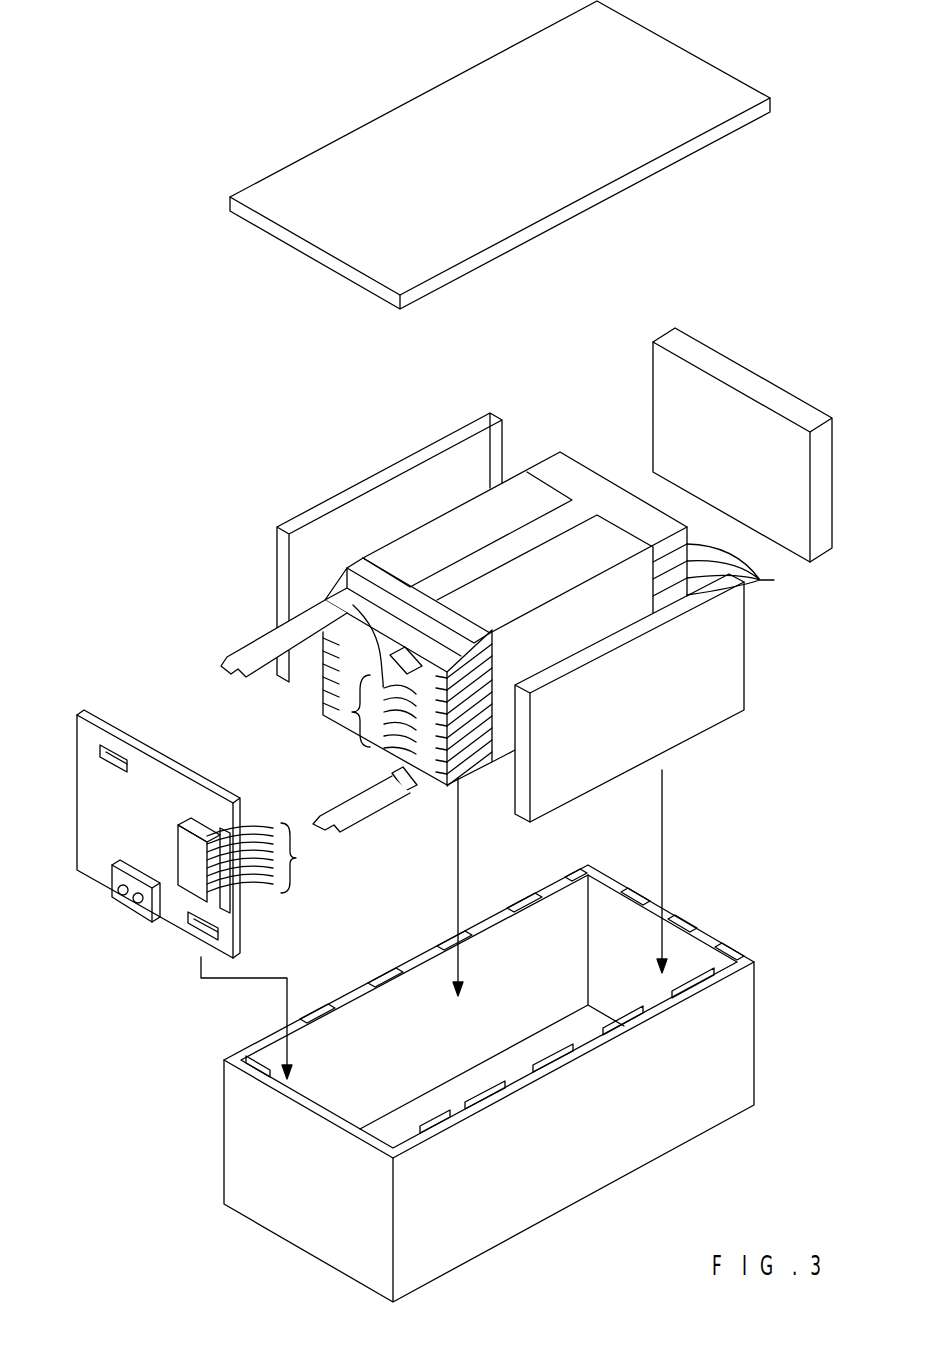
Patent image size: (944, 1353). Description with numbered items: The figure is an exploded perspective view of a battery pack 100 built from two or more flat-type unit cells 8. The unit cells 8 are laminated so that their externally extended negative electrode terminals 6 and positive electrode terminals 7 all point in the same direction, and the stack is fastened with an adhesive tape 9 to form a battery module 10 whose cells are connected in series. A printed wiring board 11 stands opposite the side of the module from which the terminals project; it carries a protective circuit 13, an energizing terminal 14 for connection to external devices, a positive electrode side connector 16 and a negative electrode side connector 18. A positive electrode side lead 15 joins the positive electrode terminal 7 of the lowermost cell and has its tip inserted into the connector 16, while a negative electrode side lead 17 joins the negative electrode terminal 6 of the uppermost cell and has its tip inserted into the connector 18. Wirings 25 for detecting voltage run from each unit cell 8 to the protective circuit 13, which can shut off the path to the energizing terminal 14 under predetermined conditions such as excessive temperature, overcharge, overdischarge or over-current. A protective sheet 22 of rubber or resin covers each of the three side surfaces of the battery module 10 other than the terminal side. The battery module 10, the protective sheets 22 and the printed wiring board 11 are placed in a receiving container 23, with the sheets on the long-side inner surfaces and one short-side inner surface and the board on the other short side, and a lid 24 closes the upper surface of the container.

The battery pack 100 is at (81, 184).
The lid 24 is at (703, 83).
The protective sheet 22 is at (350, 497).
The battery module 10 is at (439, 510).
The adhesive tape 9 is at (588, 548).
The negative electrode terminal 6 is at (327, 598).
The negative electrode side lead 17 is at (232, 652).
The positive electrode terminal 7 is at (420, 660).
The positive electrode side lead 15 is at (370, 824).
The unit cell 8 is at (738, 570).
The wiring for detecting voltage 25 is at (352, 712).
The printed wiring board 11 is at (111, 700).
The negative electrode side connector 18 is at (120, 760).
The protective circuit 13 is at (195, 823).
The energizing terminal 14 is at (138, 908).
The positive electrode side connector 16 is at (218, 937).
The receiving container 23 is at (742, 1043).